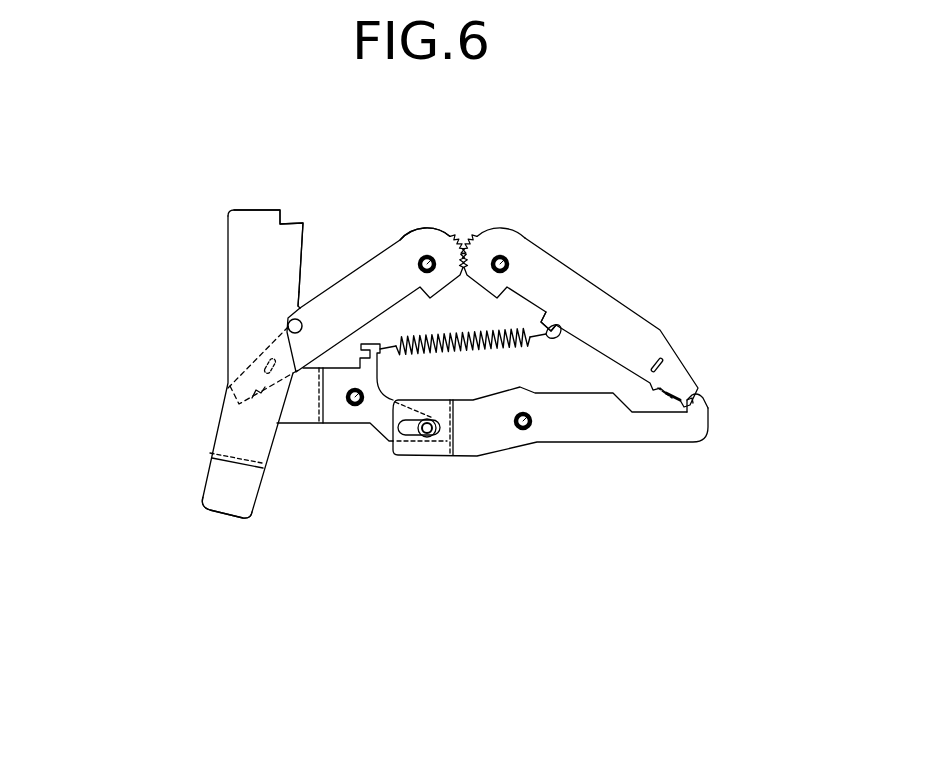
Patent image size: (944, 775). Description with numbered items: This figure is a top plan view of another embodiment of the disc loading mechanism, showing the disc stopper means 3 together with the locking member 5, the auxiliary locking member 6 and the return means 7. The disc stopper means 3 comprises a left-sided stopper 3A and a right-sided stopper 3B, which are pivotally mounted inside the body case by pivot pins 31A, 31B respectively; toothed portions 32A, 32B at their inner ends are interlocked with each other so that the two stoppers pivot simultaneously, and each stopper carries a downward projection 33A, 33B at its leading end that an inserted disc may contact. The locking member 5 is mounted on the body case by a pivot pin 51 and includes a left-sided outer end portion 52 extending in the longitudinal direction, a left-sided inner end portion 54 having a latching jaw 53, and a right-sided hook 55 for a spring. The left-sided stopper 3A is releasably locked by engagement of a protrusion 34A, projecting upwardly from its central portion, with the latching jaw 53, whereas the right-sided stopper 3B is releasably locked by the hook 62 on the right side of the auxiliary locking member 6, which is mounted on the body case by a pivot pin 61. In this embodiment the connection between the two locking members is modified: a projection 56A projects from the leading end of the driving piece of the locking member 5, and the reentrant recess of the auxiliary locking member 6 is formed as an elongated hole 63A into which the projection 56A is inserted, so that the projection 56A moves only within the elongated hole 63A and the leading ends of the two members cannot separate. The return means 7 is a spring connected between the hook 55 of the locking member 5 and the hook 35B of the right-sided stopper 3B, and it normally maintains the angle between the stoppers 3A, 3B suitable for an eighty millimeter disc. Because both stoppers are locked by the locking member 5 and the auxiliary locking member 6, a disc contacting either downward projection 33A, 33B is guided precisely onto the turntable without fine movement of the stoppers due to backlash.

The disc stopper means 3 is at (602, 177).
The left-sided stopper 3A is at (337, 297).
The right-sided stopper 3B is at (590, 298).
The locking member 5 is at (238, 325).
The auxiliary locking member 6 is at (592, 422).
The return means 7 is at (505, 333).
The pivot pin 31A is at (410, 238).
The pivot pin 31B is at (505, 260).
The toothed portion 32A is at (452, 235).
The toothed portion 32B is at (474, 235).
The downward projection 33A is at (256, 399).
The downward projection 33B is at (684, 402).
The protrusion 34A is at (298, 292).
The hook 35B is at (553, 336).
The pivot pin 51 is at (353, 398).
The left-sided outer end portion 52 is at (222, 490).
The latching jaw 53 is at (288, 318).
The left-sided inner end portion 54 is at (260, 225).
The hook 55 is at (377, 350).
The projection 56A is at (420, 430).
The pivot pin 61 is at (522, 429).
The hook 62 is at (700, 404).
The elongated hole 63A is at (440, 432).